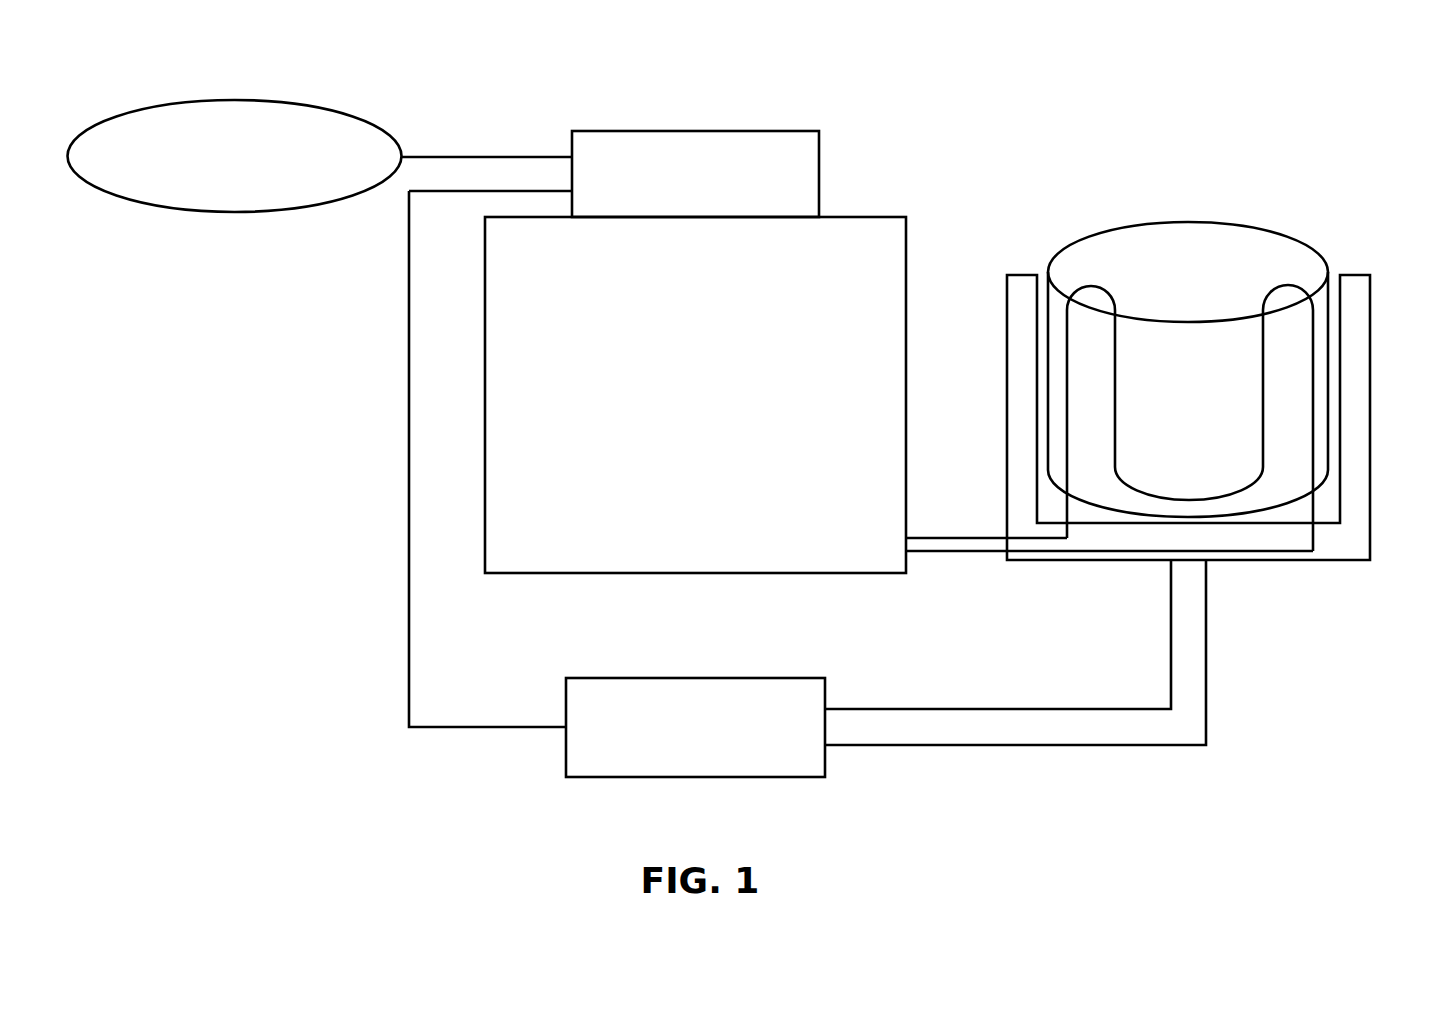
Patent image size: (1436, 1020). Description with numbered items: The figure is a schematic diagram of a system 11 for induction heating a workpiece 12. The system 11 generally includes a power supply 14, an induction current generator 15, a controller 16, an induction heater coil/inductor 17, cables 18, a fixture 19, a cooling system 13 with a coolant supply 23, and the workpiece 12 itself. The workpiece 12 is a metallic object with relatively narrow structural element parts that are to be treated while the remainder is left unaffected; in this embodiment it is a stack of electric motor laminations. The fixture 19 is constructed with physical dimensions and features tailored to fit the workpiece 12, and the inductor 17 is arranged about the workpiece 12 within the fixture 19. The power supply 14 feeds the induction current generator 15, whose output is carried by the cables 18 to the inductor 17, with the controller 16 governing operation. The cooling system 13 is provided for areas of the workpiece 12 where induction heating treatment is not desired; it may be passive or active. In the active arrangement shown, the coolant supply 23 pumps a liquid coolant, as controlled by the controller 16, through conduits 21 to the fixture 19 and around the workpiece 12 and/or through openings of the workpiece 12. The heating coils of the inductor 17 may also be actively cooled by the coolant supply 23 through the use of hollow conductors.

The system 11 is at (1203, 70).
The workpiece 12 is at (1188, 250).
The cooling system 13 is at (619, 796).
The power supply 14 is at (233, 100).
The induction current generator 15 is at (907, 395).
The controller 16 is at (624, 129).
The induction heater coil/inductor 17 is at (1315, 368).
The cables 18 is at (944, 537).
The fixture 19 is at (1353, 460).
The conduits 21 is at (1146, 650).
The coolant supply 23 is at (618, 676).